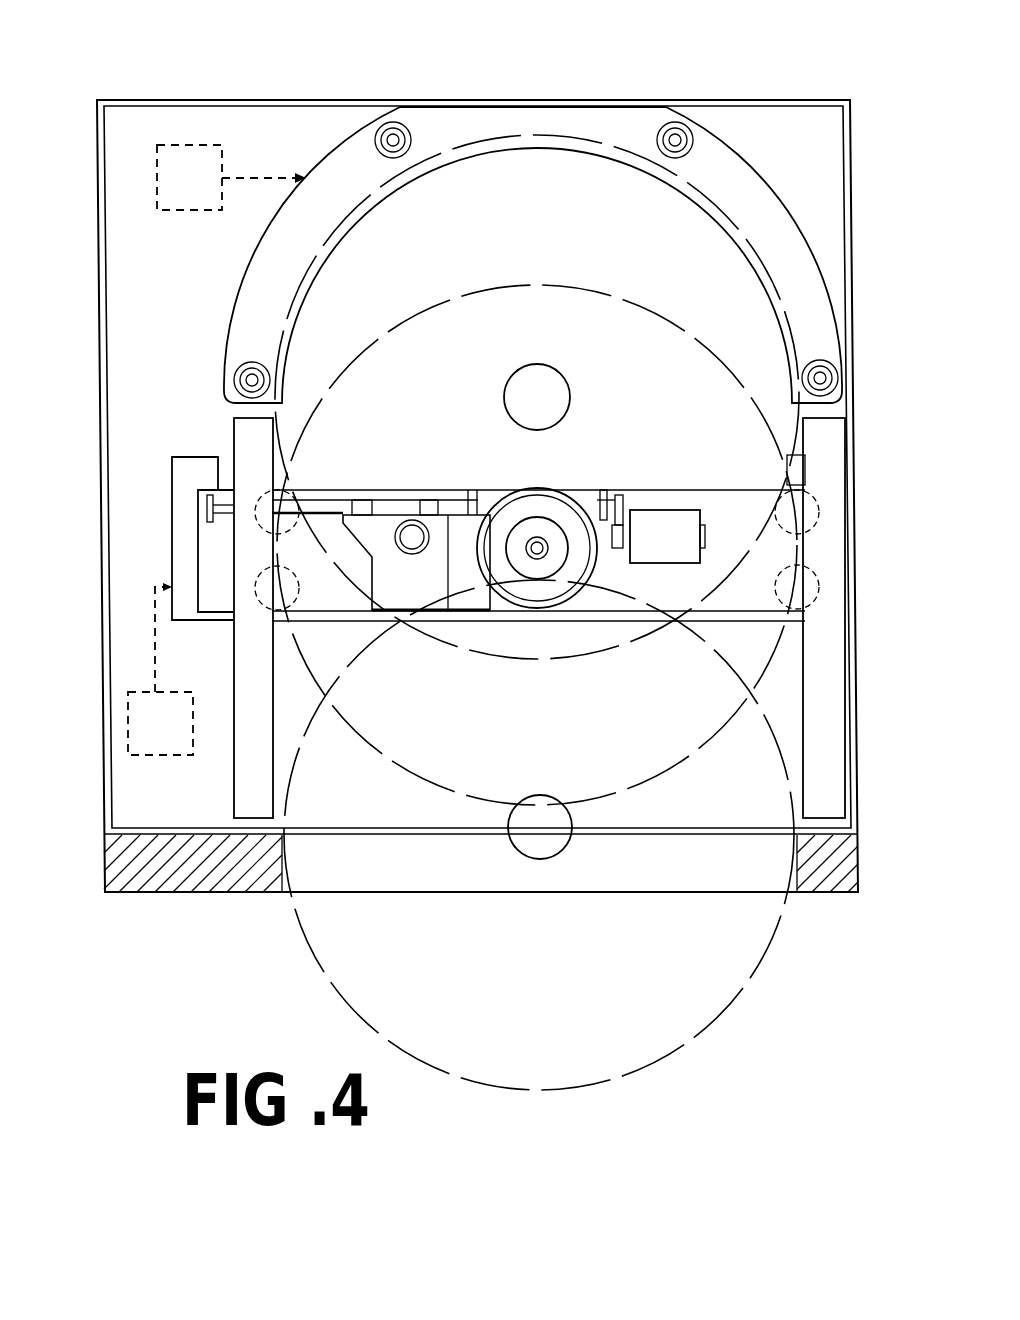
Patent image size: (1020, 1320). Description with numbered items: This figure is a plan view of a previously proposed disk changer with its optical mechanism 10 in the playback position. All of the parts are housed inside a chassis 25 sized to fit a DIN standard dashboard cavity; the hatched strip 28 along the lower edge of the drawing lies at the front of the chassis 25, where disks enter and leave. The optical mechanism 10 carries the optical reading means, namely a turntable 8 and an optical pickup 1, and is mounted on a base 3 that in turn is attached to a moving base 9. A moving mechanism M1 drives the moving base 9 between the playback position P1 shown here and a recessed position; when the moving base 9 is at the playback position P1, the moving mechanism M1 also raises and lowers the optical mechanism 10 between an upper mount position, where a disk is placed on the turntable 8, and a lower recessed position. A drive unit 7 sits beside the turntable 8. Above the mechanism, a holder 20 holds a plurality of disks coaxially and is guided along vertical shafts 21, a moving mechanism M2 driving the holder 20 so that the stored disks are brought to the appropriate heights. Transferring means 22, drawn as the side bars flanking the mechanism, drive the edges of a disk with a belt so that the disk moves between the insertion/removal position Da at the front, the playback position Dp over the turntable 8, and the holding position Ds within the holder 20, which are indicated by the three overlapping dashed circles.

The chassis 25 is at (222, 97).
The base plate 28 is at (218, 880).
The holder 20 is at (270, 253).
The vertical shafts 21 is at (393, 150).
The transferring means 22 is at (273, 758).
The optical mechanism 10 is at (586, 458).
The base 3 is at (718, 592).
The moving base 9 is at (190, 467).
The playback position P1 is at (187, 520).
The moving mechanism M1 is at (160, 669).
The moving mechanism M2 is at (231, 177).
The optical pickup 1 is at (390, 530).
The turntable 8 is at (517, 510).
The spindle motor 7 is at (667, 518).
The holding position Ds is at (534, 658).
The playback position Dp is at (676, 768).
The insertion/removal position Da is at (735, 1000).